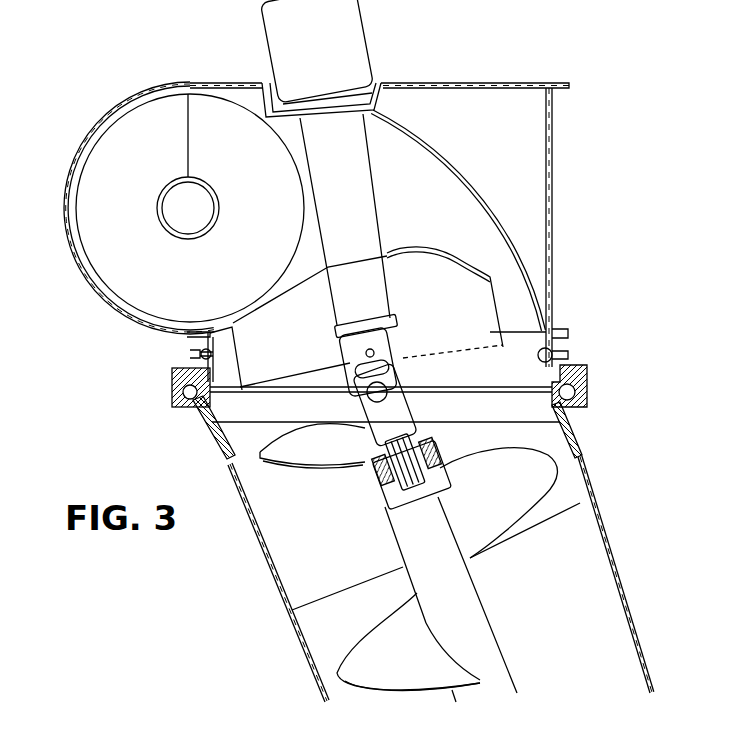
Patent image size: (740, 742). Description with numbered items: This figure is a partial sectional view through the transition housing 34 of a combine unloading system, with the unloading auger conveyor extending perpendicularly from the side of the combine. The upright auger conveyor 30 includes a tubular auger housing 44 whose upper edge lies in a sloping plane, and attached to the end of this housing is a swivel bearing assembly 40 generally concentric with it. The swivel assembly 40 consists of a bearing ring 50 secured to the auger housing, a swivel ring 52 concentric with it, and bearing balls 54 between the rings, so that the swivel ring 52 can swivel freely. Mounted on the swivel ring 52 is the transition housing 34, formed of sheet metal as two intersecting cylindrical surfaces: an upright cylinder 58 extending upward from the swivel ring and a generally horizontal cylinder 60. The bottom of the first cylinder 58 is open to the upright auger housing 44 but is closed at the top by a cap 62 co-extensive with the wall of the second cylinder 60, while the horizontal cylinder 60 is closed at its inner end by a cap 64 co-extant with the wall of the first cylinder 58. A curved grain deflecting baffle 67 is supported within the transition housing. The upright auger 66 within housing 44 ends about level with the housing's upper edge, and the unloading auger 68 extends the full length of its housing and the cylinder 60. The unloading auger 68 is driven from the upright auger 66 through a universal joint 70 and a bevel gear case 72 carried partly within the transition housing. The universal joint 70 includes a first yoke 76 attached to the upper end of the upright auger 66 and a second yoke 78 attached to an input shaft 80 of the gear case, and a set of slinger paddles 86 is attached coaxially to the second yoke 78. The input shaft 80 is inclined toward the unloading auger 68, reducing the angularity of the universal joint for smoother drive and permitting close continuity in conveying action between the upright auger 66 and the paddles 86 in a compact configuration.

The upright auger conveyor 30 is at (624, 599).
The transition housing 34 is at (552, 157).
The swivel bearing assembly 40 is at (594, 379).
The tubular auger housing 44 is at (592, 540).
The bearing ring 50 is at (577, 451).
The swivel ring 52 is at (572, 367).
The bearing balls 54 is at (583, 394).
The upright cylinder 58 is at (553, 253).
The horizontal cylinder 60 is at (64, 203).
The cap 62 is at (483, 83).
The cap 64 is at (233, 86).
The upright auger 66 is at (318, 466).
The curved grain deflecting baffle 67 is at (462, 179).
The unloading auger 68 is at (140, 112).
The universal joint 70 is at (404, 377).
The bevel gear case 72 is at (352, 34).
The first yoke 76 is at (402, 412).
The second yoke 78 is at (395, 360).
The input shaft 80 is at (393, 320).
The slinger paddles 86 is at (441, 260).